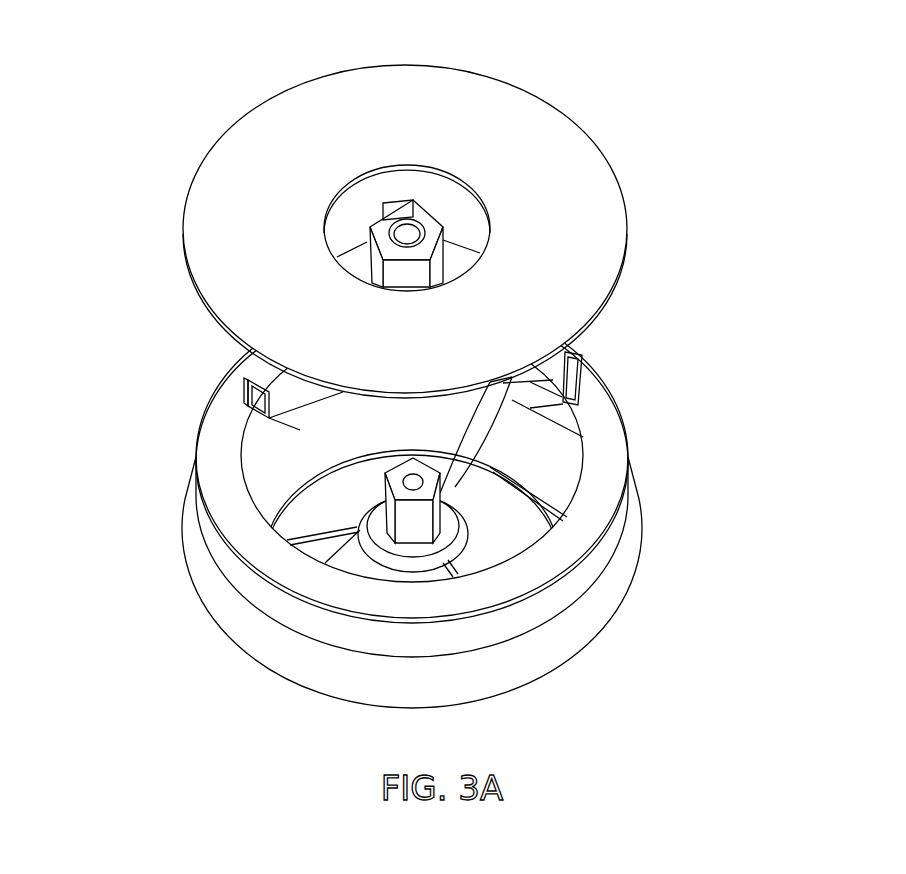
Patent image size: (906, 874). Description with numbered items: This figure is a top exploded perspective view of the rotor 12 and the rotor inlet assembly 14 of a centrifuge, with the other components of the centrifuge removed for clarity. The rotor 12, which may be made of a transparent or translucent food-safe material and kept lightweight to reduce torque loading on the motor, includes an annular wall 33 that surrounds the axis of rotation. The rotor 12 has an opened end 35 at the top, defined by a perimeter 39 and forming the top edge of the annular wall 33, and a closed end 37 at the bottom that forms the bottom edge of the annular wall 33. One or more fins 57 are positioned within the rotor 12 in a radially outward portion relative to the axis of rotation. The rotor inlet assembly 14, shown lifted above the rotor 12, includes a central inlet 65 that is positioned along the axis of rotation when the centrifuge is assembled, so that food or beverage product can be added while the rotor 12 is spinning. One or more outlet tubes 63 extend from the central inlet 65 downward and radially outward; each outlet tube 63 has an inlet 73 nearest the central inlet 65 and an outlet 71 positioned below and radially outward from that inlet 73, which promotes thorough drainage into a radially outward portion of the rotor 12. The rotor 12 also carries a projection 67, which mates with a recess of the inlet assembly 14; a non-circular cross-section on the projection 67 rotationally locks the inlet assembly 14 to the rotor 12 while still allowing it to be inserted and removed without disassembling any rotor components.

The rotor 12 is at (146, 560).
The rotor inlet assembly 14 is at (153, 256).
The annular wall 33 is at (563, 645).
The opened end 35 is at (581, 477).
The closed end 37 is at (520, 510).
The perimeter 39 is at (418, 588).
The fins 57 is at (481, 453).
The outlet tubes 63 is at (287, 385).
The central inlet 65 is at (445, 190).
The projection 67 is at (437, 512).
The outlet 71 is at (241, 402).
The inlet 73 is at (390, 207).